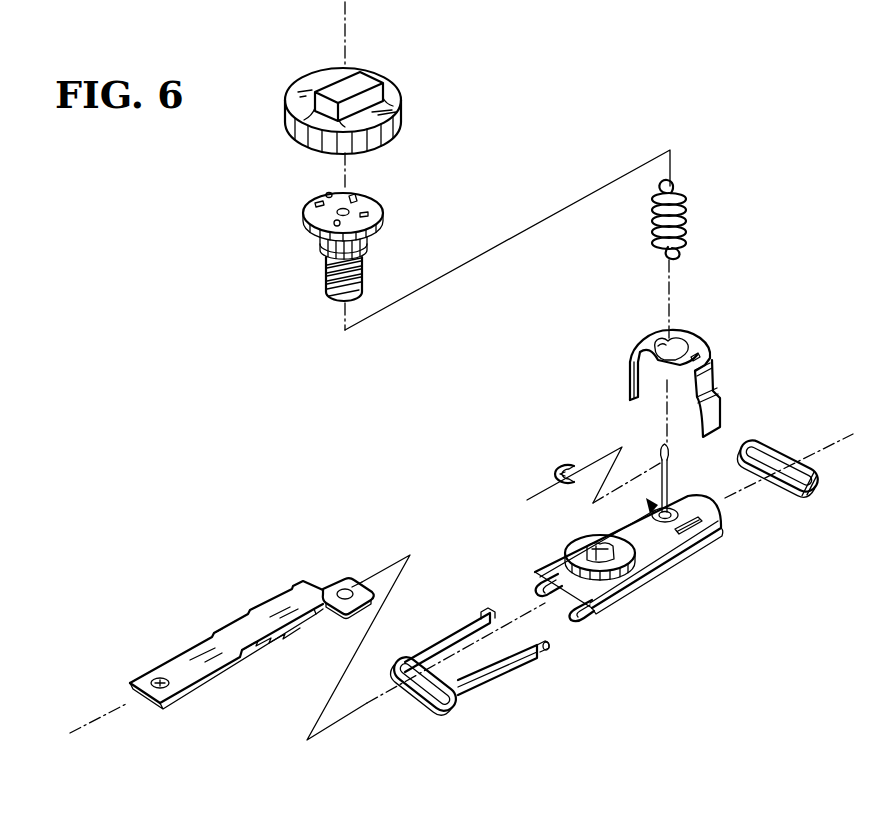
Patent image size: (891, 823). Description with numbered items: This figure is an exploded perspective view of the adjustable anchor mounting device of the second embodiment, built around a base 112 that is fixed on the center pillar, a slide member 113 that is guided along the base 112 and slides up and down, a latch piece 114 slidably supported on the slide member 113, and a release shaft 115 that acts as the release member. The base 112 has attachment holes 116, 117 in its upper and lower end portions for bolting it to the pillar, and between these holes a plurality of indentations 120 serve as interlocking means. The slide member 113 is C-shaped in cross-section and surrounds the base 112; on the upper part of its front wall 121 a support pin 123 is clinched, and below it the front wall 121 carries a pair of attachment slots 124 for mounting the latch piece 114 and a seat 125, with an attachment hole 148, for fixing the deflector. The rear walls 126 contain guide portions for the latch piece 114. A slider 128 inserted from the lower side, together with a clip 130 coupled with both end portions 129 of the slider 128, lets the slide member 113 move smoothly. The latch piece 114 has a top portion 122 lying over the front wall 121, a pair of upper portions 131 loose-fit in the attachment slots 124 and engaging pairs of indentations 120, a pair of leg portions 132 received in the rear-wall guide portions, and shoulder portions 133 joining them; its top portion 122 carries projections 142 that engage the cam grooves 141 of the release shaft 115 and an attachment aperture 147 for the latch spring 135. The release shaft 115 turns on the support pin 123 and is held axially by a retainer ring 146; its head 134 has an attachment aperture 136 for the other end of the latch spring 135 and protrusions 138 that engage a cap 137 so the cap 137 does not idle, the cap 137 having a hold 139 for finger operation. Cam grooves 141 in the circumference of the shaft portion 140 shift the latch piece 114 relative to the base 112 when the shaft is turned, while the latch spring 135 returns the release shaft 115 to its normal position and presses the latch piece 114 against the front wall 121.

The base 112 is at (224, 624).
The slide member 113 is at (664, 581).
The latch piece 114 is at (694, 348).
The release shaft 115 is at (374, 236).
The attachment hole 116 is at (344, 593).
The attachment hole 117 is at (160, 680).
The indentations 120 is at (250, 609).
The front wall 121 is at (632, 525).
The top portion 122 is at (652, 340).
The support pin 123 is at (668, 480).
The attachment slots 124 is at (693, 530).
The seat 125 is at (545, 537).
The rear walls 126 is at (576, 618).
The slider 128 is at (516, 670).
The end portions 129 is at (548, 651).
The clip 130 is at (772, 452).
The upper portions 131 is at (630, 363).
The leg portions 132 is at (720, 420).
The shoulder portions 133 is at (722, 388).
The head 134 is at (333, 189).
The latch spring 135 is at (687, 200).
The attachment aperture 136 is at (327, 193).
The cap 137 is at (402, 116).
The protrusions 138 is at (356, 195).
The hold 139 is at (372, 68).
The shaft portion 140 is at (330, 266).
The cam grooves 141 is at (363, 278).
The projections 142 is at (682, 333).
The retainer ring 146 is at (553, 468).
The attachment aperture 147 is at (702, 349).
The attachment hole 148 is at (588, 543).